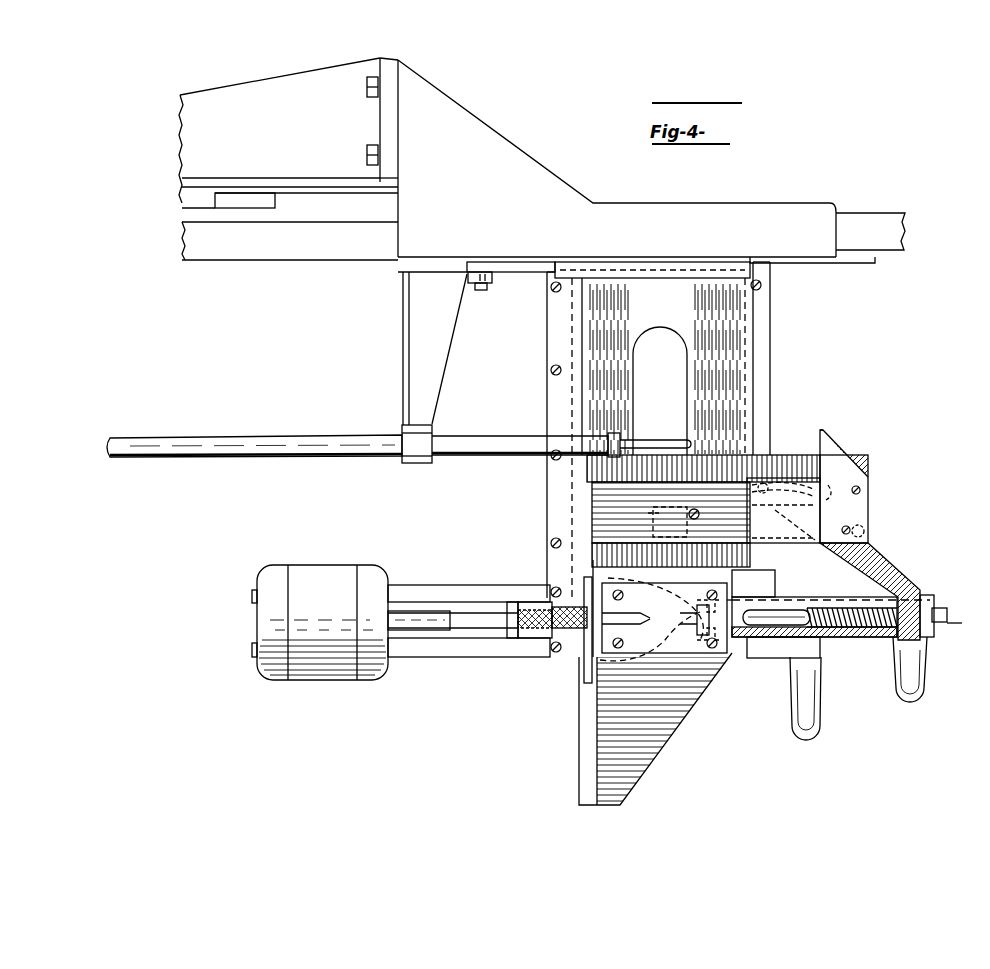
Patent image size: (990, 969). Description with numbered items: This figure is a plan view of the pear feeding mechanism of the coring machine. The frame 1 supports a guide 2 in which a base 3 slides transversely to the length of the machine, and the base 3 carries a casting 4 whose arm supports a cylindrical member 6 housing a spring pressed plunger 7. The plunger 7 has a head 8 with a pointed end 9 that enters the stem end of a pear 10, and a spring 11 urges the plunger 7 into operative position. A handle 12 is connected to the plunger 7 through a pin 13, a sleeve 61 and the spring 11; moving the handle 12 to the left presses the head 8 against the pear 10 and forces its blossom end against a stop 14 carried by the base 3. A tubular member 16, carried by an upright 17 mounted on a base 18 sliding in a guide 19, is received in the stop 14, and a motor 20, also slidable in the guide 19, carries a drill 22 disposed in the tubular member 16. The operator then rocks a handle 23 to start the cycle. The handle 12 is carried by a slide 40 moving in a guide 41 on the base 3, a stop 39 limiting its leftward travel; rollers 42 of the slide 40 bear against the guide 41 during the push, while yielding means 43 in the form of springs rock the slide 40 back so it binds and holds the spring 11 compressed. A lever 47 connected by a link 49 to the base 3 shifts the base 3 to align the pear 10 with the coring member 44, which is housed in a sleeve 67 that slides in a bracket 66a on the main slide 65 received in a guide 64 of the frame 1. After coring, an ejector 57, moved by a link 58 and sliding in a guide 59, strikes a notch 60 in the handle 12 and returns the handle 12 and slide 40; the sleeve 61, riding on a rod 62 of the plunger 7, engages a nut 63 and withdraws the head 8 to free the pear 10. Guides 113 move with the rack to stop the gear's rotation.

The frame 1 is at (782, 208).
The guide 2 is at (771, 331).
The base 3 is at (662, 742).
The casting 4 is at (696, 648).
The cylindrical member 6 is at (762, 642).
The spring pressed plunger 7 is at (784, 616).
The head 8 is at (733, 641).
The pointed end 9 is at (733, 609).
The pear 10 is at (651, 619).
The spring 11 is at (832, 610).
The handle 12 is at (922, 668).
The pin 13 is at (910, 604).
The stop 14 is at (589, 666).
The tubular member 16 is at (560, 600).
The upright 17 is at (538, 640).
The base 18 is at (512, 603).
The guide 19 is at (461, 593).
The motor 20 is at (313, 580).
The drill 22 is at (500, 630).
The handle 23 is at (822, 715).
The stop 39 is at (700, 515).
The slide 40 is at (783, 510).
The guide 41 is at (623, 470).
The roller 42 is at (764, 483).
The yielding means 43 is at (828, 490).
The coring member 44 is at (689, 443).
The lever 47 is at (674, 510).
The link 49 is at (671, 524).
The ejector 57 is at (526, 263).
The link 58 is at (479, 270).
The guide 59 is at (692, 264).
The notch 60 is at (820, 438).
The sleeve 61 is at (928, 597).
The rod 62 is at (947, 615).
The nut 63 is at (964, 627).
The guide 64 is at (843, 262).
The main slide 65 is at (290, 241).
The bracket 66a is at (436, 356).
The sleeve 67 is at (287, 440).
The guides 113 is at (312, 186).